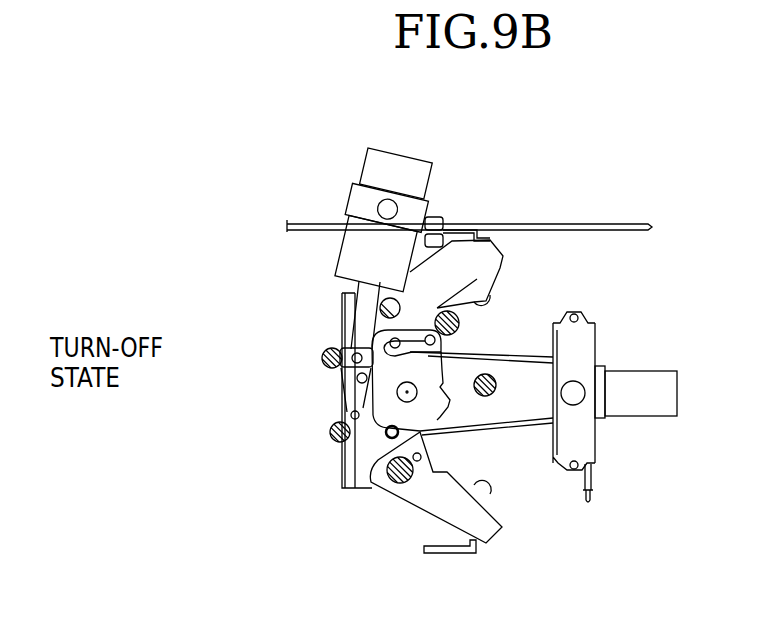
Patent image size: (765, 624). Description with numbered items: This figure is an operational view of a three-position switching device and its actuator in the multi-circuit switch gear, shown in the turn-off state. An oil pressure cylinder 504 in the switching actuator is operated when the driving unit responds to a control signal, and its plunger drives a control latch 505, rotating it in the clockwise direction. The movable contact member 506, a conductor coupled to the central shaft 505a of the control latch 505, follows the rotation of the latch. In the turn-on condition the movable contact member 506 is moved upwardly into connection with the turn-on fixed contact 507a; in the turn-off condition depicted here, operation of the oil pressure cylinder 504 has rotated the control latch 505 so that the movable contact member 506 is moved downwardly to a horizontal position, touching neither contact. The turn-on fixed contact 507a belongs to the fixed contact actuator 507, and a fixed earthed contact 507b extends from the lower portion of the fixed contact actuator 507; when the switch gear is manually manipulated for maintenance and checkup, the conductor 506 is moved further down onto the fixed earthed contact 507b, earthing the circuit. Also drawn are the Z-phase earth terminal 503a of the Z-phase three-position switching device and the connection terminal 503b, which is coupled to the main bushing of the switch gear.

The oil pressure cylinder 504 is at (358, 259).
The control latch 505 is at (383, 383).
The central shaft 505a is at (405, 394).
The movable contact member 506 is at (660, 378).
The fixed contact actuator 507 is at (486, 252).
The turn-on fixed contact 507a is at (500, 300).
The fixed earthed contact 507b is at (490, 492).
The Z-phase earth terminal 503a is at (423, 552).
The connection terminal 503b is at (597, 493).